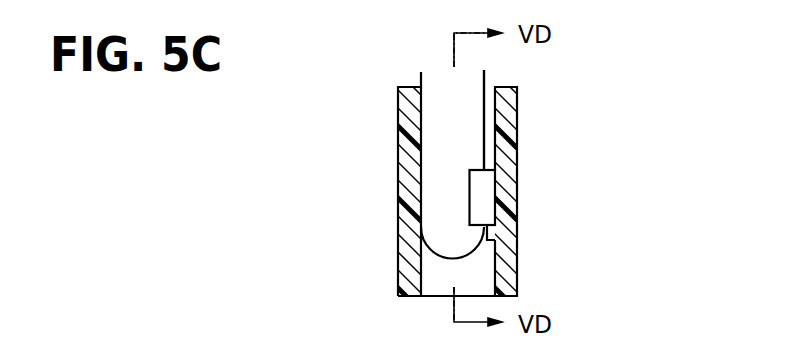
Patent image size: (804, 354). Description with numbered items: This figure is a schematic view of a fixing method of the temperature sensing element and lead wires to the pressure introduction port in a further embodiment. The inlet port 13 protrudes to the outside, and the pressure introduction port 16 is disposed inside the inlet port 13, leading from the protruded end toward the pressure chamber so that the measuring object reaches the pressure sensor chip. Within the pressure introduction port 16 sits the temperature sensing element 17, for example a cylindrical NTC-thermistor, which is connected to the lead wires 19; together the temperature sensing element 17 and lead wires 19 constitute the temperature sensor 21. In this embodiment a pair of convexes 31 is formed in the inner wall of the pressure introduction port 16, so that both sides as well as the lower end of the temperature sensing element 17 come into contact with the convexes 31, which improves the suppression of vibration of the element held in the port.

The inlet port 13 is at (412, 175).
The pressure introduction port 16 is at (445, 276).
The temperature sensing element 17 is at (485, 203).
The lead wires 19 is at (486, 130).
The temperature sensor 21 is at (498, 70).
The convexes 31 is at (480, 253).